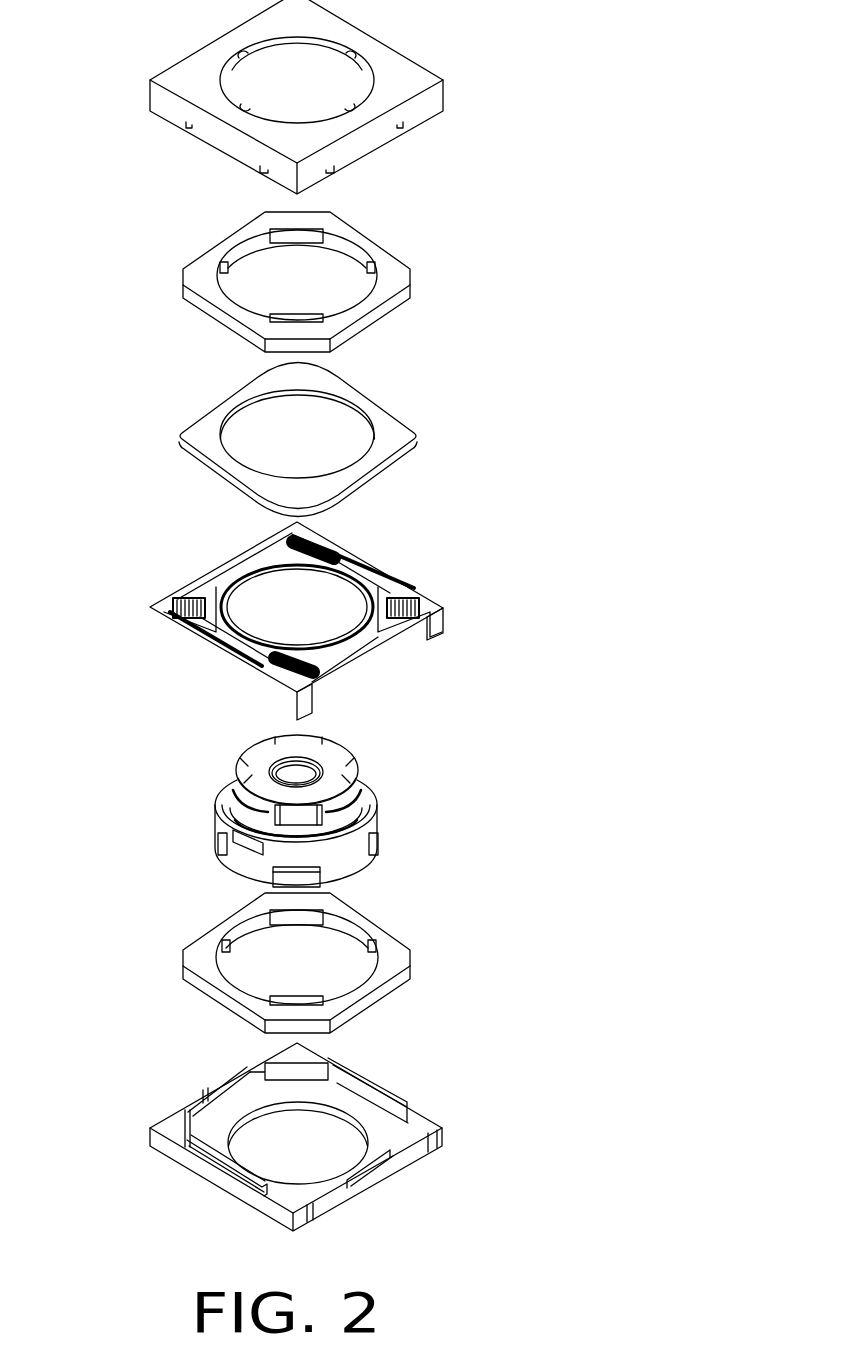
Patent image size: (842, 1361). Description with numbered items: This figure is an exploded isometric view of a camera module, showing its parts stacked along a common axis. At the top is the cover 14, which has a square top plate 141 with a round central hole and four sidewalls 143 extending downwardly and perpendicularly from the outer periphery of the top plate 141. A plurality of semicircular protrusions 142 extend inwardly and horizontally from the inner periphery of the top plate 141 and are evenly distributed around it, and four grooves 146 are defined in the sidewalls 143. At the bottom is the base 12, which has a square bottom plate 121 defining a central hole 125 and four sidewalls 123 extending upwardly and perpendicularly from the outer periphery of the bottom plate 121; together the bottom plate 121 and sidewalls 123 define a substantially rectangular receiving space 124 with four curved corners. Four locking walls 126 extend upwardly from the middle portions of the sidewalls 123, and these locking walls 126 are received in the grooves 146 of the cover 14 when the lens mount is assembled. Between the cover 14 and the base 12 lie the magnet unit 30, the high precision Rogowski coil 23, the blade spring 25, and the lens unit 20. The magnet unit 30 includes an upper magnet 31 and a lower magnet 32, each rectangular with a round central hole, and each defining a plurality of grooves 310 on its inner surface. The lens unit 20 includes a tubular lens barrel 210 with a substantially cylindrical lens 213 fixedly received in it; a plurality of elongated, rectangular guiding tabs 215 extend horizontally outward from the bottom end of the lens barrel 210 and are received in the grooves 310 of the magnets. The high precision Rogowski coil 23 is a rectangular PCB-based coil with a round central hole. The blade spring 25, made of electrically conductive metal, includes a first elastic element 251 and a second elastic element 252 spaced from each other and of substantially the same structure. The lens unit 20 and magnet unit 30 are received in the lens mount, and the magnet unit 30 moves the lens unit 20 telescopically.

The base 12 is at (291, 1134).
The bottom plate 121 is at (380, 1120).
The sidewalls 123 is at (330, 1200).
The receiving space 124 is at (205, 1133).
The central hole 125 is at (263, 1134).
The locking walls 126 is at (377, 1165).
The cover 14 is at (290, 97).
The top plate 141 is at (400, 80).
The protrusions 142 is at (348, 53).
The sidewalls 143 is at (425, 100).
The grooves 146 is at (393, 140).
The lens unit 20 is at (374, 807).
The lens barrel 210 is at (367, 811).
The lens 213 is at (336, 773).
The guiding tabs 215 is at (312, 876).
The high precision Rogowski coil 23 is at (394, 438).
The blade spring 25 is at (294, 607).
The first elastic element 251 is at (168, 603).
The second elastic element 252 is at (302, 533).
The magnet unit 30 is at (241, 606).
The upper magnet 31 is at (266, 265).
The grooves 310 is at (287, 233).
The lower magnet 32 is at (203, 943).